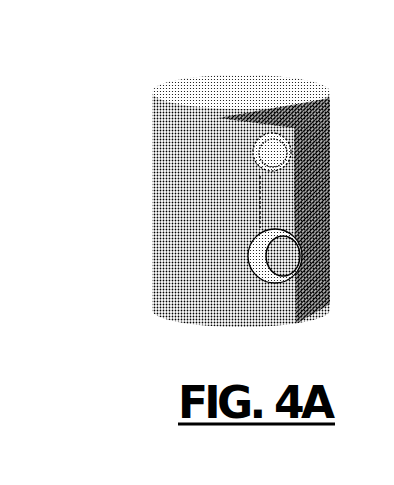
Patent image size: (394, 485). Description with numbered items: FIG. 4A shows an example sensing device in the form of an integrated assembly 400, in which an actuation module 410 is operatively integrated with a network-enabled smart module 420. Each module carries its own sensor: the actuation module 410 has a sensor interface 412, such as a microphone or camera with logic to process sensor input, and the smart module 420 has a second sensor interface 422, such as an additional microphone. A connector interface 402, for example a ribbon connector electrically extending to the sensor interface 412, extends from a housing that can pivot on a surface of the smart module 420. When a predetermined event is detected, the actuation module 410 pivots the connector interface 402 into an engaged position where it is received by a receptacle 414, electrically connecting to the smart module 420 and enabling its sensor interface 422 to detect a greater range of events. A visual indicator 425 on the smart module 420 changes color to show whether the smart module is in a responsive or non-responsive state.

The assembly 400 is at (130, 82).
The connector interface 402 is at (250, 227).
The actuation module 410 is at (282, 273).
The sensor interface 412 is at (300, 255).
The receptacle 414 is at (300, 192).
The smart module 420 is at (298, 95).
The sensor interface 422 is at (270, 155).
The visual indicator 425 is at (300, 137).